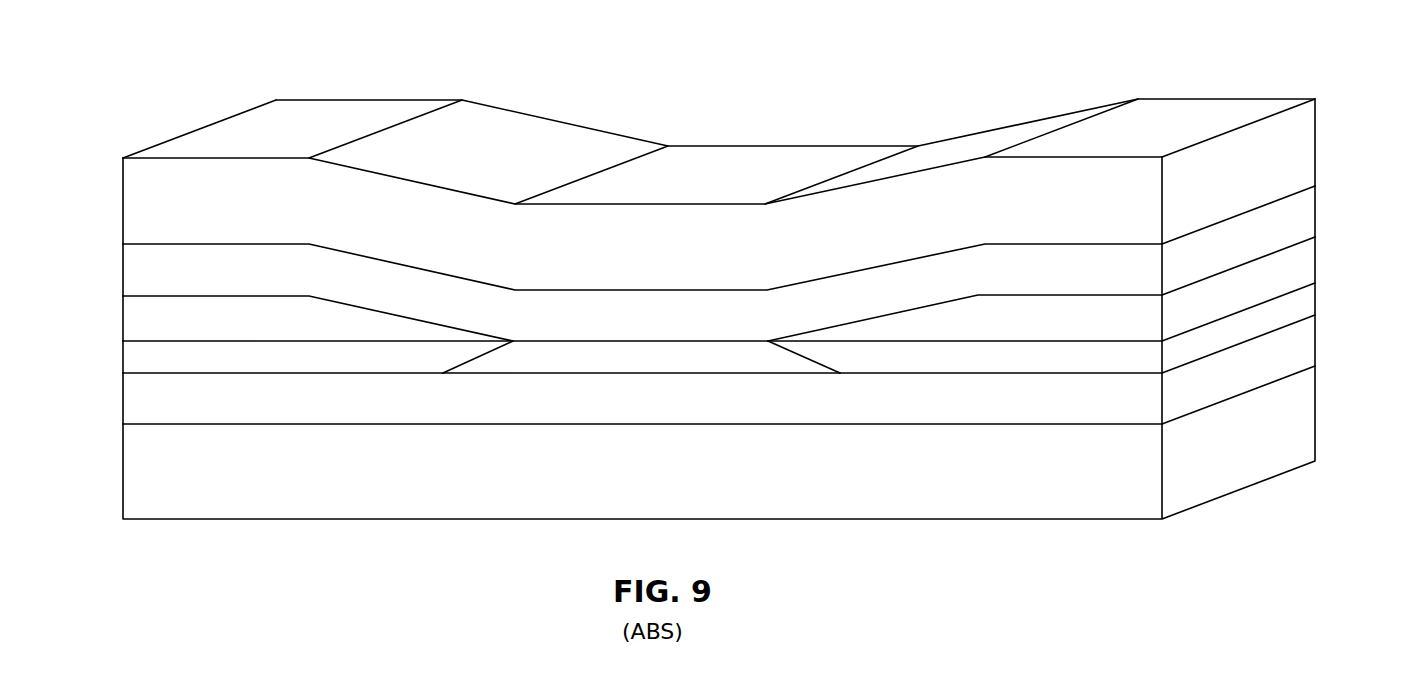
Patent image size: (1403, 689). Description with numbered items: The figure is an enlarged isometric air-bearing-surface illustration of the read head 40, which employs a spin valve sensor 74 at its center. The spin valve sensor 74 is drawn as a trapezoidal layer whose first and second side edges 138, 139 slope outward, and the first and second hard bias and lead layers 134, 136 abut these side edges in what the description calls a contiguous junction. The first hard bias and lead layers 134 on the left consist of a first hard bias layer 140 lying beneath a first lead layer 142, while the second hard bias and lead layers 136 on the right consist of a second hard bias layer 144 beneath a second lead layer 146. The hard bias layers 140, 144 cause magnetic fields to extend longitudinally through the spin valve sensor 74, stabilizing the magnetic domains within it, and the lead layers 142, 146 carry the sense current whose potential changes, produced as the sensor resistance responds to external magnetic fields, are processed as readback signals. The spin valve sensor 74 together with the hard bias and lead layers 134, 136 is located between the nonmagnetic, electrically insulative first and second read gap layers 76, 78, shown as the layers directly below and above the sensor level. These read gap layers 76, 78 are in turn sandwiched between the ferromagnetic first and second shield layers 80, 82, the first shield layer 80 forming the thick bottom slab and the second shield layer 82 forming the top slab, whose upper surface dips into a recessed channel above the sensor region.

The read head 40 is at (719, 321).
The spin valve sensor 74 is at (549, 341).
The first read gap layer 76 is at (523, 415).
The second read gap layer 78 is at (373, 275).
The first shield layer 80 is at (299, 498).
The second shield layer 82 is at (570, 135).
The first hard bias and lead layers 134 is at (281, 335).
The second hard bias and lead layers 136 is at (1078, 327).
The first side edge 138 is at (460, 362).
The second side edge 139 is at (820, 362).
The first hard bias layer 140 is at (283, 379).
The first lead layer 142 is at (167, 308).
The second hard bias layer 144 is at (1108, 358).
The second lead layer 146 is at (1110, 307).